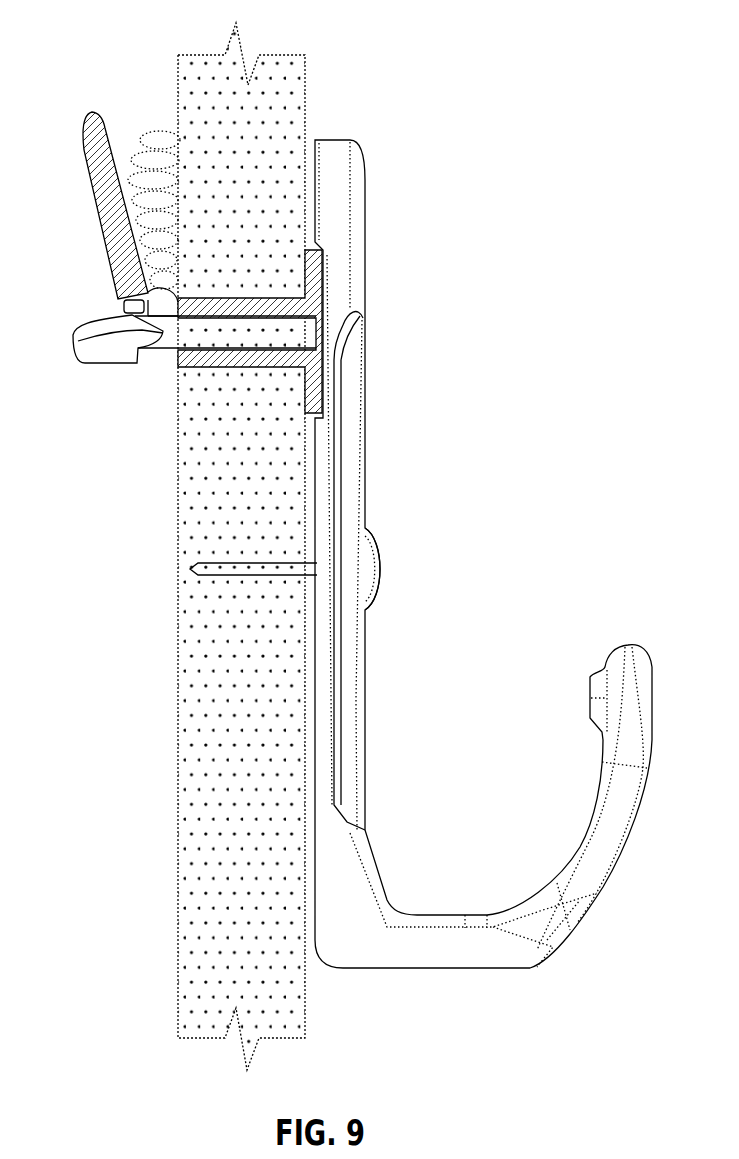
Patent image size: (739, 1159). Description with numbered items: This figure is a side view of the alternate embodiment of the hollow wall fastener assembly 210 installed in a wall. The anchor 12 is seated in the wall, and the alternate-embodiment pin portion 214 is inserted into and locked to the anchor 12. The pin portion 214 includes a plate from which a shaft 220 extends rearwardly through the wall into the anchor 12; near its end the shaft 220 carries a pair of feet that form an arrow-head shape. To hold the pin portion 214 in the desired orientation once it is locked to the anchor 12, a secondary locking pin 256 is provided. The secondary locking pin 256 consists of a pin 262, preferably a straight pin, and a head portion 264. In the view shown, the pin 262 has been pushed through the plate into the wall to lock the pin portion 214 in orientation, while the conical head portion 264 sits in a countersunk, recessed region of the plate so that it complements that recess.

The hollow wall fastener assembly 210 is at (408, 170).
The pin portion 214 is at (367, 287).
The shaft 220 is at (223, 337).
The secondary locking pin 256 is at (380, 542).
The head portion 264 is at (380, 568).
The pin 262 is at (190, 568).
The anchor 12 is at (178, 353).